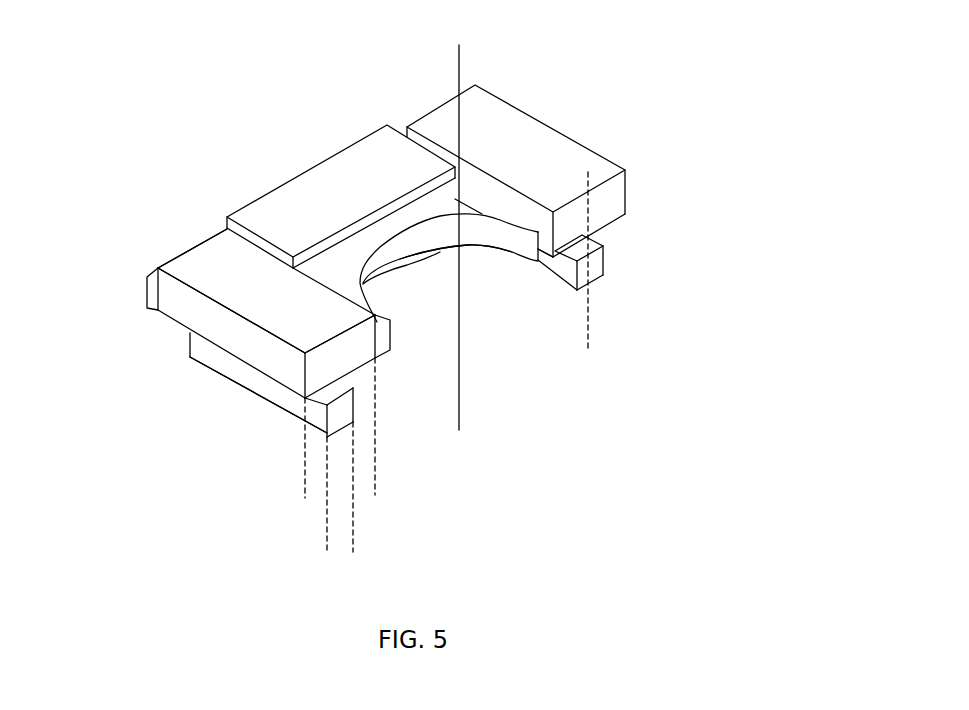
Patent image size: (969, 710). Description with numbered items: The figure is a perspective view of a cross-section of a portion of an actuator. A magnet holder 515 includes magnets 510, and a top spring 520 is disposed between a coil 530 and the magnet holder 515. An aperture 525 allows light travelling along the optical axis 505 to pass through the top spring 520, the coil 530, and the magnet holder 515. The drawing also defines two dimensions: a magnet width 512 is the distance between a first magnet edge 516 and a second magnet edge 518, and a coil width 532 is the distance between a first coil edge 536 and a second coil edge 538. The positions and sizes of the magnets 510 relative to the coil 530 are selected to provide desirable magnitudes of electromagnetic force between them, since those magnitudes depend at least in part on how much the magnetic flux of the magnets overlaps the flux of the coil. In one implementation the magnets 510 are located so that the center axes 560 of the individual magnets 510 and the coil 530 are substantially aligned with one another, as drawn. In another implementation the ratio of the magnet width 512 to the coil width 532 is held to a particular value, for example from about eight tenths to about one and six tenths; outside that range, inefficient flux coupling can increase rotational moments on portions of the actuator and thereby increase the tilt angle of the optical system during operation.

The optical axis 505 is at (459, 77).
The magnets 510 is at (553, 129).
The magnet width 512 is at (445, 385).
The magnet holder 515 is at (480, 246).
The first magnet edge 516 is at (337, 310).
The second magnet edge 518 is at (280, 343).
The top spring 520 is at (593, 222).
The aperture 525 is at (442, 309).
The coil 530 is at (603, 262).
The coil width 532 is at (423, 453).
The first coil edge 536 is at (353, 388).
The second coil edge 538 is at (297, 418).
The center axes 560 is at (588, 322).